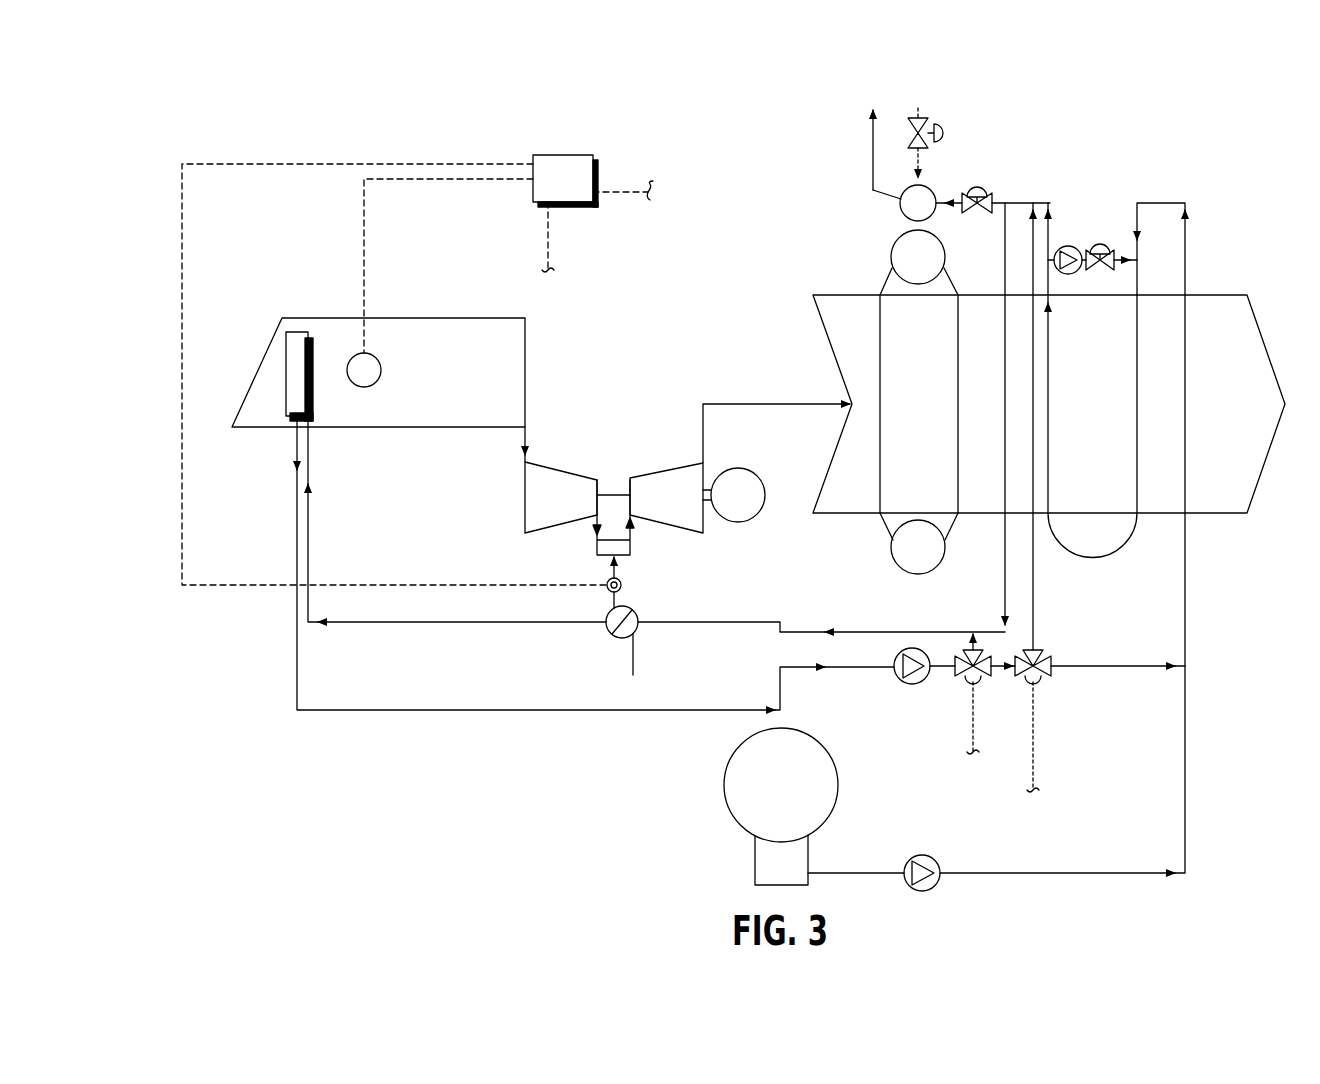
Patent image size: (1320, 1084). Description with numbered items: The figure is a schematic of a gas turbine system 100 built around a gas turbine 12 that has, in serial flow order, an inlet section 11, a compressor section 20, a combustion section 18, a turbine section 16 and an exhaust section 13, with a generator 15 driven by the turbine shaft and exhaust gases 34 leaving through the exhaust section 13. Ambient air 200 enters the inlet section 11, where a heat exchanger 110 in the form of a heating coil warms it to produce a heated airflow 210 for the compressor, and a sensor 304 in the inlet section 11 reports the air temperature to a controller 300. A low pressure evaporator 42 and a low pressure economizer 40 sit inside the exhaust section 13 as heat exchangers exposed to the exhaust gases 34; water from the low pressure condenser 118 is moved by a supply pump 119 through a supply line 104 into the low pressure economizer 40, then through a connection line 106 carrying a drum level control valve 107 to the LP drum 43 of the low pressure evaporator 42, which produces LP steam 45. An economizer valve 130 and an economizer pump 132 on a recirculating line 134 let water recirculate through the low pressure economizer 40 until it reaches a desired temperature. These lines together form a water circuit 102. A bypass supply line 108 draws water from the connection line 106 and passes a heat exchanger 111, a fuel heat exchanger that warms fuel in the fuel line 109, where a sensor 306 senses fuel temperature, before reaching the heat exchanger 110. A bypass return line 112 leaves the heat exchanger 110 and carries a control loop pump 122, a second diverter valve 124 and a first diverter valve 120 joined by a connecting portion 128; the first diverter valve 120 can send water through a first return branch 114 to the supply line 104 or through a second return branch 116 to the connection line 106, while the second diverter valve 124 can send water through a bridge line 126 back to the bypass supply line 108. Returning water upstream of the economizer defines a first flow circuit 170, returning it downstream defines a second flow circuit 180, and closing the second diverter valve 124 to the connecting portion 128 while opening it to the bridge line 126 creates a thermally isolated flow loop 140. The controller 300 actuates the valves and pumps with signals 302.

The gas turbine system 100 is at (198, 126).
The air 200 is at (166, 388).
The second flow circuit 180 is at (210, 667).
The flow loop 140 is at (415, 752).
The gas turbine 12 is at (675, 345).
The water circuit 102 is at (1205, 152).
The first flow circuit 170 is at (1265, 590).
The controller 300 is at (394, 370).
The signals 302 is at (548, 212).
The inlet section 11 is at (450, 317).
The heat exchanger 110 is at (298, 378).
The sensor 304 is at (381, 372).
The heated airflow 210 is at (522, 452).
The compressor section 20 is at (548, 468).
The turbine section 16 is at (665, 470).
The combustion section 18 is at (597, 548).
The generator 15 is at (738, 468).
The exhaust gases 34 is at (740, 403).
The sensor 306 is at (621, 583).
The heat exchanger 111 is at (638, 614).
The fuel line 109 is at (633, 660).
The bypass supply line 108 is at (540, 625).
The bypass return line 112 is at (497, 712).
The low pressure condenser 118 is at (725, 782).
The supply pump 119 is at (922, 855).
The supply line 104 is at (1185, 778).
The exhaust section 13 is at (1210, 295).
The low pressure evaporator 42 is at (919, 402).
The low pressure economizer 40 is at (1092, 380).
The LP drum 43 is at (906, 190).
The LP steam 45 is at (873, 128).
The drum level control valve 107 is at (985, 190).
The connection line 106 is at (1020, 203).
The economizer pump 132 is at (1068, 246).
The recirculating line 134 is at (1115, 255).
The economizer valve 130 is at (1100, 244).
The second return branch 116 is at (1033, 608).
The bridge line 126 is at (968, 640).
The control loop pump 122 is at (912, 684).
The second diverter valve 124 is at (982, 676).
The connecting portion 128 is at (1000, 668).
The first diverter valve 120 is at (1043, 658).
The first return branch 114 is at (1110, 668).